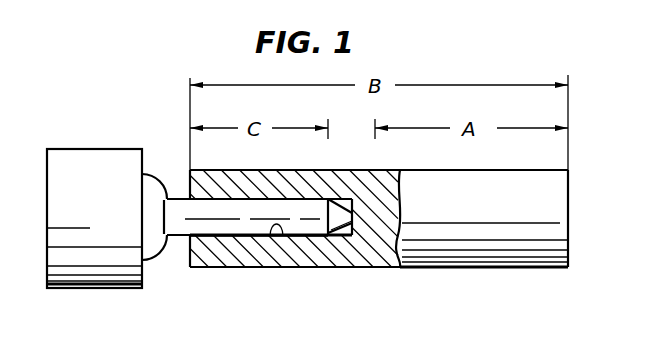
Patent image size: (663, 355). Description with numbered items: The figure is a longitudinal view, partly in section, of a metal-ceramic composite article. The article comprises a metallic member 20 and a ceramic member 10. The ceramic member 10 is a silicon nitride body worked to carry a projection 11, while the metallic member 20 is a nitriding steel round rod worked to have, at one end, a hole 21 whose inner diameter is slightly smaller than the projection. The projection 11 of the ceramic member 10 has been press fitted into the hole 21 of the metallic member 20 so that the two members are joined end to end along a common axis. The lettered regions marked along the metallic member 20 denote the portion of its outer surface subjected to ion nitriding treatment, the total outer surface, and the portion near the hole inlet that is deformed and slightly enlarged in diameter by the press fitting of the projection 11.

The ceramic member 10 is at (105, 270).
The projection 11 is at (240, 217).
The metallic member 20 is at (502, 233).
The hole 21 is at (279, 240).